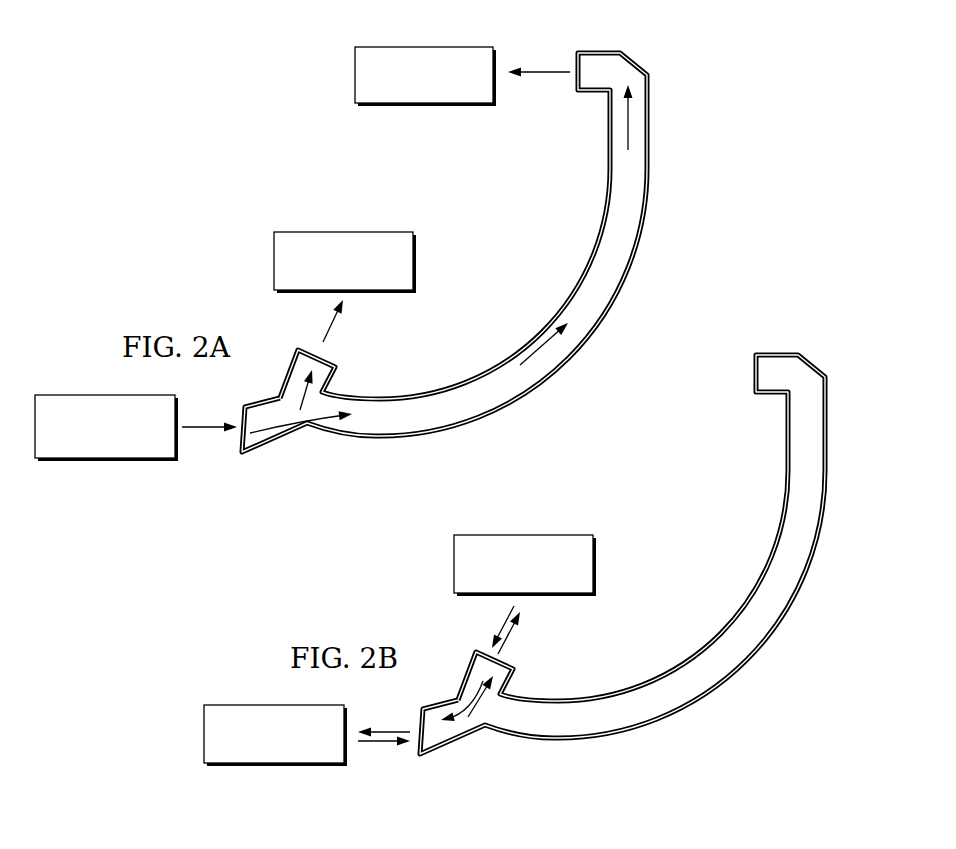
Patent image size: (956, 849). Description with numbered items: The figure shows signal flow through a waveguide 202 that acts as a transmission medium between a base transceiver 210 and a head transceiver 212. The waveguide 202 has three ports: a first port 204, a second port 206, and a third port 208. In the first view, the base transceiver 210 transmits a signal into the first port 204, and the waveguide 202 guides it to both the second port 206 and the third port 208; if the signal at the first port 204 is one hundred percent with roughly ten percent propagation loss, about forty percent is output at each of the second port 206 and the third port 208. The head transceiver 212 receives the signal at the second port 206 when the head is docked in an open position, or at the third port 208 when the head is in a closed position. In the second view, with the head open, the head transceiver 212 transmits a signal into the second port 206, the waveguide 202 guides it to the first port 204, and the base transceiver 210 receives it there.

In FIG. 2A, the waveguide 202 is at (656, 178).
In FIG. 2B, the waveguide 202 is at (758, 661).
In FIG. 2A, the first port 204 is at (243, 440).
In FIG. 2B, the first port 204 is at (422, 740).
In FIG. 2A, the second port 206 is at (328, 362).
In FIG. 2B, the second port 206 is at (506, 662).
In FIG. 2A, the third port 208 is at (578, 69).
In FIG. 2B, the third port 208 is at (755, 372).
In FIG. 2A, the base transceiver 210 is at (103, 460).
In FIG. 2B, the base transceiver 210 is at (273, 765).
In FIG. 2A, the head transceiver 212 is at (355, 76).
In FIG. 2B, the head transceiver 212 is at (454, 562).